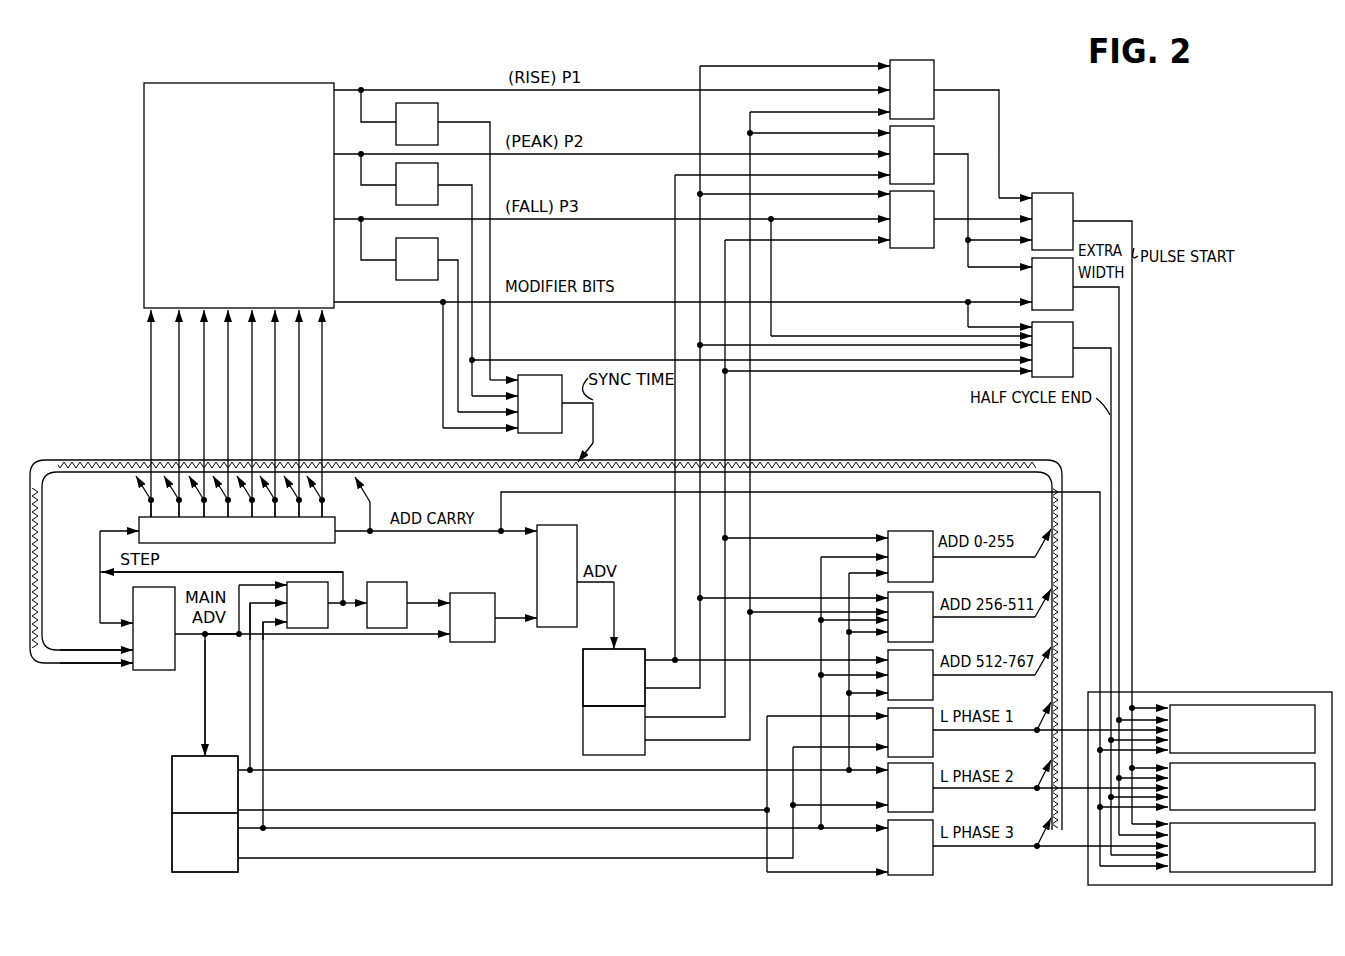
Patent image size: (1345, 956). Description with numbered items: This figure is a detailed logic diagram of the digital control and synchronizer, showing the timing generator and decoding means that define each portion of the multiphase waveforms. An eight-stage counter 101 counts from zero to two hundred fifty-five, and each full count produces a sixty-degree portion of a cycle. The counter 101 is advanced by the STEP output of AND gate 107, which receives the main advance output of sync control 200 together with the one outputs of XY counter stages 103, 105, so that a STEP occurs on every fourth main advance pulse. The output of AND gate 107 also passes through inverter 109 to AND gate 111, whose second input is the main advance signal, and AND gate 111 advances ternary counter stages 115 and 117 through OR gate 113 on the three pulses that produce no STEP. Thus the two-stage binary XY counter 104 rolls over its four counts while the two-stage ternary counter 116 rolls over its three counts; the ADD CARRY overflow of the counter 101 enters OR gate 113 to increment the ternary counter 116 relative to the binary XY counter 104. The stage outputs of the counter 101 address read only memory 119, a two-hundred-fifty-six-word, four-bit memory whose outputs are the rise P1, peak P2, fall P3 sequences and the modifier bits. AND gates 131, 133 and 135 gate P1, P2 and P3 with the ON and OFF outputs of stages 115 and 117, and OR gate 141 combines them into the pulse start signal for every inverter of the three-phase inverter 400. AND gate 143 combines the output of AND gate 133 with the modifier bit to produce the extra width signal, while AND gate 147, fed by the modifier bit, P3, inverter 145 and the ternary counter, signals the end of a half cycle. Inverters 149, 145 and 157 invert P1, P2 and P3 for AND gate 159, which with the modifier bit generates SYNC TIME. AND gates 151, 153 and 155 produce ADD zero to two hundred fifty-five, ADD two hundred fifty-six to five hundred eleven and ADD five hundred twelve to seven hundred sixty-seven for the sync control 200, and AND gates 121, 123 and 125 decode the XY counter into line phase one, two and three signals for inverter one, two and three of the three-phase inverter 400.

The read only memory 119 is at (144, 178).
The inverter 149 is at (438, 110).
The inverter 145 is at (396, 198).
The inverter 157 is at (396, 276).
The AND gate 159 is at (560, 433).
The AND gate 131 is at (934, 72).
The AND gate 133 is at (934, 148).
The AND gate 135 is at (892, 248).
The OR gate 141 is at (1052, 193).
The AND gate 143 is at (1032, 290).
The AND gate 147 is at (1073, 340).
The counter 101 is at (139, 520).
The sync control 200 is at (133, 670).
The AND gate 107 is at (328, 611).
The inverter 109 is at (390, 582).
The AND gate 111 is at (457, 642).
The OR gate 113 is at (577, 531).
The ternary counter stage 115 is at (628, 649).
The ternary counter 116 is at (583, 697).
The ternary counter stage 117 is at (583, 728).
The XY counter stage 103 is at (178, 756).
The binary XY counter 104 is at (172, 797).
The XY counter stage 105 is at (172, 845).
The AND gate 151 is at (888, 533).
The AND gate 153 is at (933, 592).
The AND gate 155 is at (933, 690).
The AND gate 121 is at (933, 747).
The AND gate 123 is at (888, 795).
The AND gate 125 is at (933, 868).
The three-phase inverter 400 is at (1305, 692).